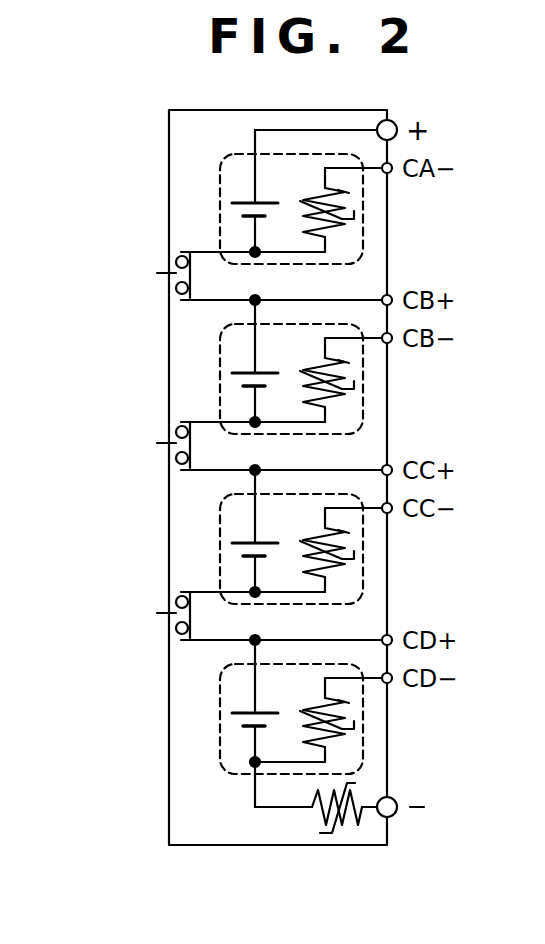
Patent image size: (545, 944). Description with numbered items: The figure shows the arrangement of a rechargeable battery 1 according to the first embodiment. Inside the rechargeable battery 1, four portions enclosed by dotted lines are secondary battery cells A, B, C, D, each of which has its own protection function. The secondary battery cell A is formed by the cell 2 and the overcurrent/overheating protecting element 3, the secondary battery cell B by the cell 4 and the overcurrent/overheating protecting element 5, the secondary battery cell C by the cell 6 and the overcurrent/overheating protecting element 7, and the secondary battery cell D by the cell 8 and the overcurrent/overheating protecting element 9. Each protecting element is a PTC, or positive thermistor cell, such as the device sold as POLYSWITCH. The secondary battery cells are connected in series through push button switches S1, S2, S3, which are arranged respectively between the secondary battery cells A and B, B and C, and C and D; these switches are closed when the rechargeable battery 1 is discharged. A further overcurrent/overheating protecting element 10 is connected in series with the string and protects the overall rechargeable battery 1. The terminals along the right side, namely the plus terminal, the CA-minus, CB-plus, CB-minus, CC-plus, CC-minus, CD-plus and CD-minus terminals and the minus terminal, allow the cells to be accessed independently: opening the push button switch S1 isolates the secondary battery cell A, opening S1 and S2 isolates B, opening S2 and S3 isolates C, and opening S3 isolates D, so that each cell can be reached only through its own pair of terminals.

The rechargeable battery 1 is at (278, 110).
The cell 2 is at (232, 203).
The overcurrent/overheating protecting element 3 is at (344, 196).
The cell 4 is at (232, 373).
The overcurrent/overheating protecting element 5 is at (344, 366).
The cell 6 is at (232, 543).
The overcurrent/overheating protecting element 7 is at (344, 536).
The cell 8 is at (232, 713).
The overcurrent/overheating protecting element 9 is at (344, 706).
The overcurrent/overheating protecting element 10 is at (350, 821).
The push button switch S1 is at (157, 273).
The push button switch S2 is at (157, 443).
The push button switch S3 is at (157, 613).
The secondary battery cell A is at (220, 177).
The secondary battery cell B is at (220, 347).
The secondary battery cell C is at (220, 517).
The secondary battery cell D is at (220, 687).